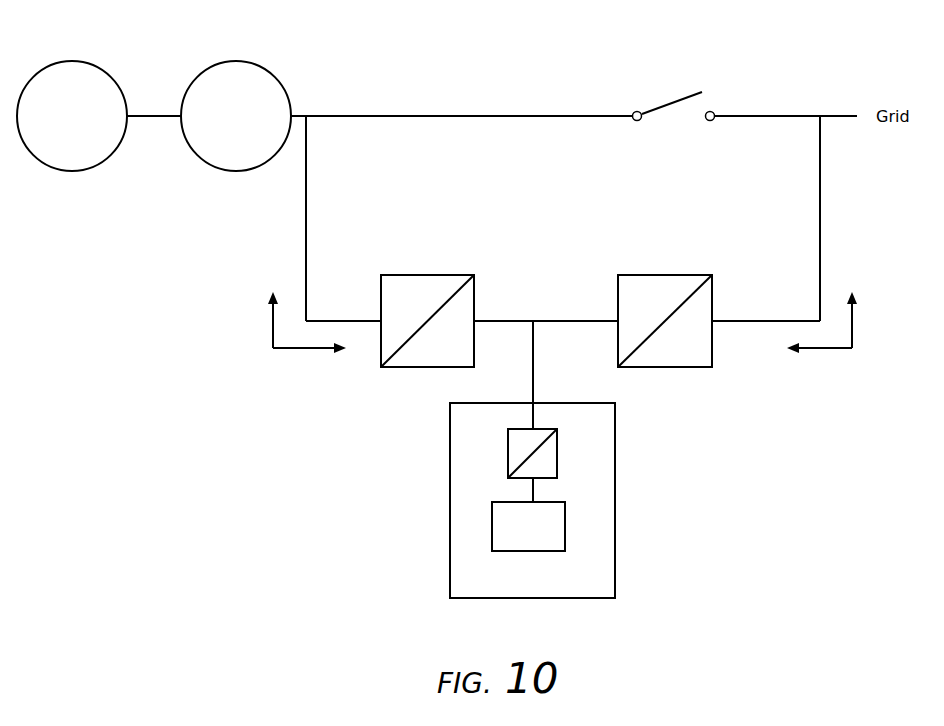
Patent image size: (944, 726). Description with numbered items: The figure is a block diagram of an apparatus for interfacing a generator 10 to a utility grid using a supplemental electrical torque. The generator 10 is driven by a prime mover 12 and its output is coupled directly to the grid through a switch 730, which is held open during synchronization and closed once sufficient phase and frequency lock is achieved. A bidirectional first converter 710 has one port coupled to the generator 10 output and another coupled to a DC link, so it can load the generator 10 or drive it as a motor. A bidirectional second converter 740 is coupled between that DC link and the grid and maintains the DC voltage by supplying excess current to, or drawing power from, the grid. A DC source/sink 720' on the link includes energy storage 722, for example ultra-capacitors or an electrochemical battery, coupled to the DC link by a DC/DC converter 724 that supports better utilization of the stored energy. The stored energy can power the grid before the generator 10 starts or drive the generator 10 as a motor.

The prime mover 12 is at (75, 61).
The generator 10 is at (237, 61).
The switch 730 is at (706, 75).
The converter 710 is at (427, 275).
The second converter 740 is at (665, 275).
The DC source/sink 720' is at (540, 521).
The DC/DC converter 724 is at (557, 452).
The energy storage 722 is at (565, 525).